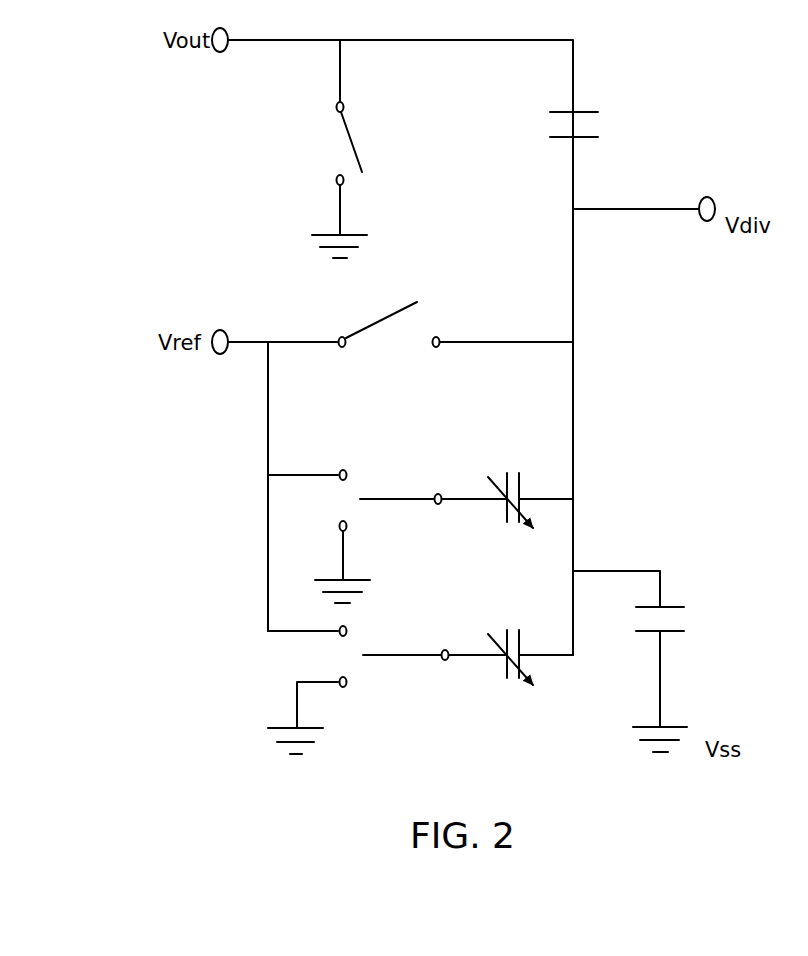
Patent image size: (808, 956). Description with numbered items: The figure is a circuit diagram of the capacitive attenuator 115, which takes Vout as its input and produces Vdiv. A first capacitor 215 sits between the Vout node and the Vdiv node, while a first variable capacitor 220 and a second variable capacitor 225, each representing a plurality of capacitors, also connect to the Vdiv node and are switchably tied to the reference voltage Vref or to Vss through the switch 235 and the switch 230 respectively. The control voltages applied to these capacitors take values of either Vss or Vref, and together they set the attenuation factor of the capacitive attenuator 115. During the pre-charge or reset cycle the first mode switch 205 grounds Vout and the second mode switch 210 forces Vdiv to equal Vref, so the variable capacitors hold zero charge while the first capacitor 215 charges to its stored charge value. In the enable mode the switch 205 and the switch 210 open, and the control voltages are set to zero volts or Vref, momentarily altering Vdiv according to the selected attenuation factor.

The capacitive attenuator 115 is at (154, 608).
The first mode switch 205 is at (352, 139).
The second mode switch 210 is at (352, 333).
The first capacitor 215 is at (580, 111).
The first variable capacitor 220 is at (503, 488).
The second variable capacitor 225 is at (506, 643).
The switch 230 is at (390, 657).
The switch 235 is at (390, 500).